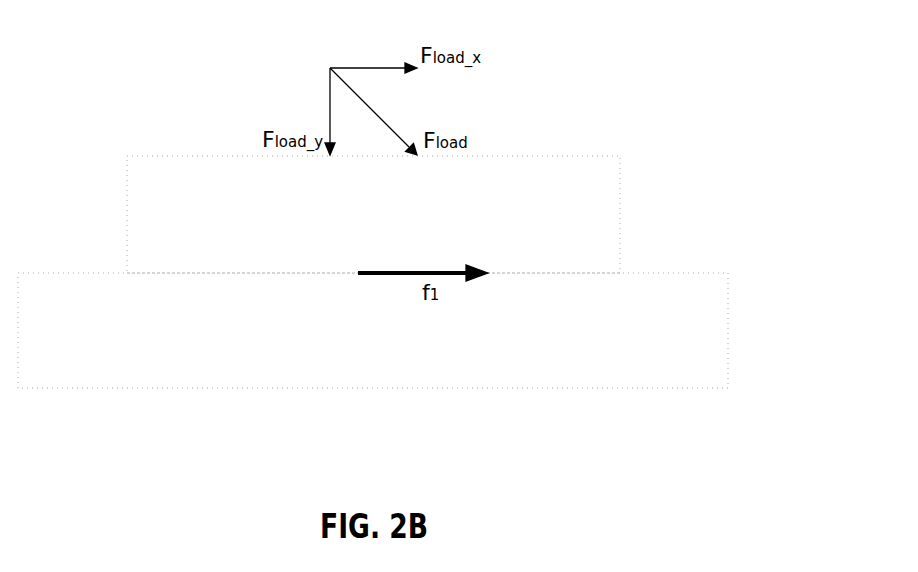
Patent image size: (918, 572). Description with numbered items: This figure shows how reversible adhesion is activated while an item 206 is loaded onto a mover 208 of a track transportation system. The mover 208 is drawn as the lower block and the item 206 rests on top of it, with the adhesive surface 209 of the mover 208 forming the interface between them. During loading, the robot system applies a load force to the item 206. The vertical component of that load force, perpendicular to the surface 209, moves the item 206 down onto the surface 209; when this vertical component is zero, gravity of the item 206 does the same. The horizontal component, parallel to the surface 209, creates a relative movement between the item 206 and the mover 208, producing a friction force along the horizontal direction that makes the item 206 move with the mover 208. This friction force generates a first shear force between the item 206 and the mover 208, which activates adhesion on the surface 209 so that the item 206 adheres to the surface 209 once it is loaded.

The item 206 is at (620, 200).
The mover 208 is at (728, 343).
The adhesive surface 209 is at (682, 272).